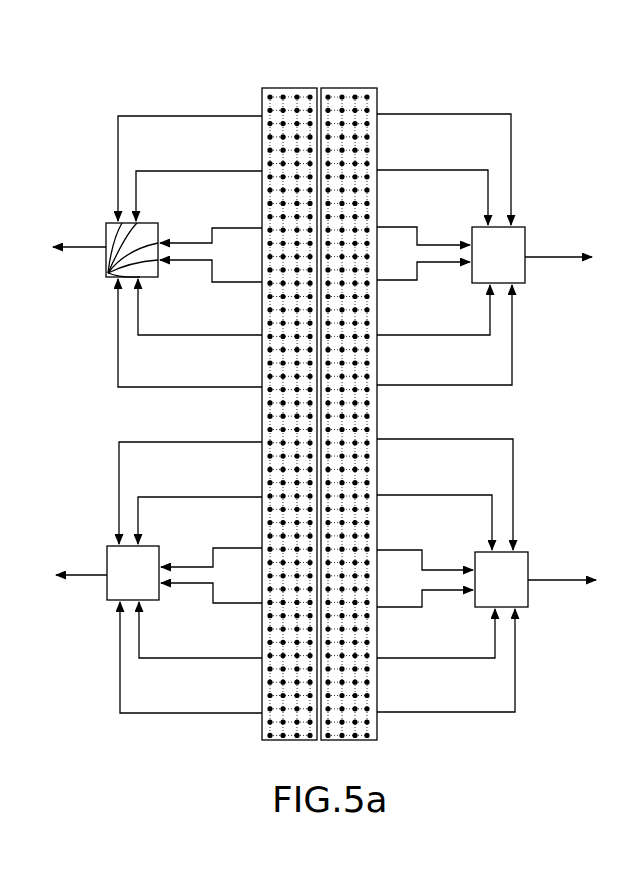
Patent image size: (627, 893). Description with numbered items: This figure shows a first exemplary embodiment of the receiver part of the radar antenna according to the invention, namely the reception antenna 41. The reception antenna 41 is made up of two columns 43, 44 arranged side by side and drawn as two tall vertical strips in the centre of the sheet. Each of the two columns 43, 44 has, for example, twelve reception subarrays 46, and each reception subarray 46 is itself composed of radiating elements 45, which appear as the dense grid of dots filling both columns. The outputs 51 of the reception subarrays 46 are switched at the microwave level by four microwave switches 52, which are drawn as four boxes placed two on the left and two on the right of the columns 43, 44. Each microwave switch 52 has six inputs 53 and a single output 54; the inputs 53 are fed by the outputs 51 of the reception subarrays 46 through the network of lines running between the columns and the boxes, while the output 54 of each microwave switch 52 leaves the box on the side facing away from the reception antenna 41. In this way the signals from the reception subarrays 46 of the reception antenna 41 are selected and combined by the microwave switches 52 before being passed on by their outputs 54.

The reception antenna 41 is at (382, 83).
The first column 43 is at (276, 743).
The second column 44 is at (361, 743).
The radiating elements 45 is at (383, 448).
The reception subarrays 46 is at (382, 114).
The outputs 51 is at (260, 372).
The microwave switches 52 is at (106, 226).
The inputs 53 is at (128, 278).
The output 54 is at (50, 247).